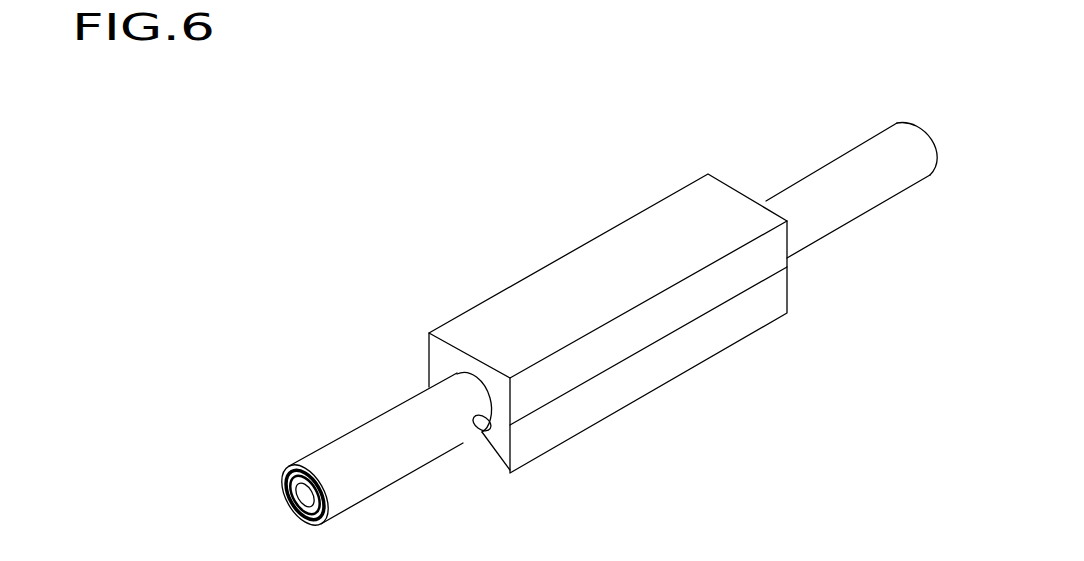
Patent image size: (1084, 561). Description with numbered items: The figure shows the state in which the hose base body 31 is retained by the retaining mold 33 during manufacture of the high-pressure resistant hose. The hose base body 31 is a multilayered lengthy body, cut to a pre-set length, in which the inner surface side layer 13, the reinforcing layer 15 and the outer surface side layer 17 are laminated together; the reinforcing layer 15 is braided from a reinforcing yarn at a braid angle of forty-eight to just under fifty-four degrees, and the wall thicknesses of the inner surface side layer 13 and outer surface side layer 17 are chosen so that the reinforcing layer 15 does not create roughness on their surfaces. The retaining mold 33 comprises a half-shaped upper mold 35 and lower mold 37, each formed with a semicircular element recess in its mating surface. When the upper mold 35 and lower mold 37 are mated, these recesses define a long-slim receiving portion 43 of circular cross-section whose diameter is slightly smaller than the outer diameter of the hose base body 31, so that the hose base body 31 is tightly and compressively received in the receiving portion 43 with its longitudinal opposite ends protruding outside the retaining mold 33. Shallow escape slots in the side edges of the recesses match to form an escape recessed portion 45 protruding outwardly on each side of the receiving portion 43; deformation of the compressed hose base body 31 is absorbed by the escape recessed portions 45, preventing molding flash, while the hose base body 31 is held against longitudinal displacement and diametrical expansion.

The inner surface side layer 13 is at (283, 486).
The reinforcing layer 15 is at (291, 471).
The outer surface side layer 17 is at (318, 463).
The hose base body 31 is at (574, 328).
The retaining mold 33 is at (605, 330).
The upper mold 35 is at (652, 257).
The lower mold 37 is at (698, 340).
The receiving portion 43 is at (454, 374).
The escape recessed portion 45 is at (463, 445).